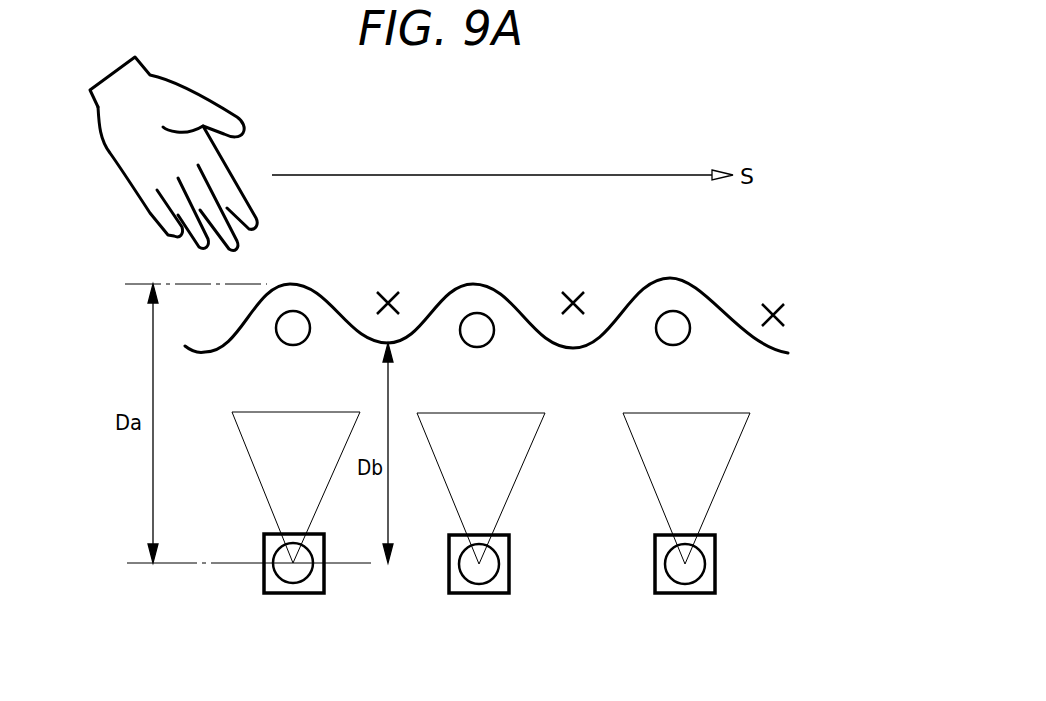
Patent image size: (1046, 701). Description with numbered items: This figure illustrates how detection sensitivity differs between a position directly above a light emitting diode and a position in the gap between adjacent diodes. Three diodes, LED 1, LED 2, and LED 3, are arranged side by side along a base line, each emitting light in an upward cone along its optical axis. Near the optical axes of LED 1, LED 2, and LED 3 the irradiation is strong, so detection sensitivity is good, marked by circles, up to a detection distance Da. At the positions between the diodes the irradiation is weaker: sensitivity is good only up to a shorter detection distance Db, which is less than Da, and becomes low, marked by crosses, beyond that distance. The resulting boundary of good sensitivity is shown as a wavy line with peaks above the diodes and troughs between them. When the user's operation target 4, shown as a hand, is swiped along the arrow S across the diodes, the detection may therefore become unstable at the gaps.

The user's operation target 4 is at (195, 90).
The LED 1 LED1 is at (293, 594).
The LED 2 LED2 is at (479, 594).
The LED 3 LED3 is at (685, 594).